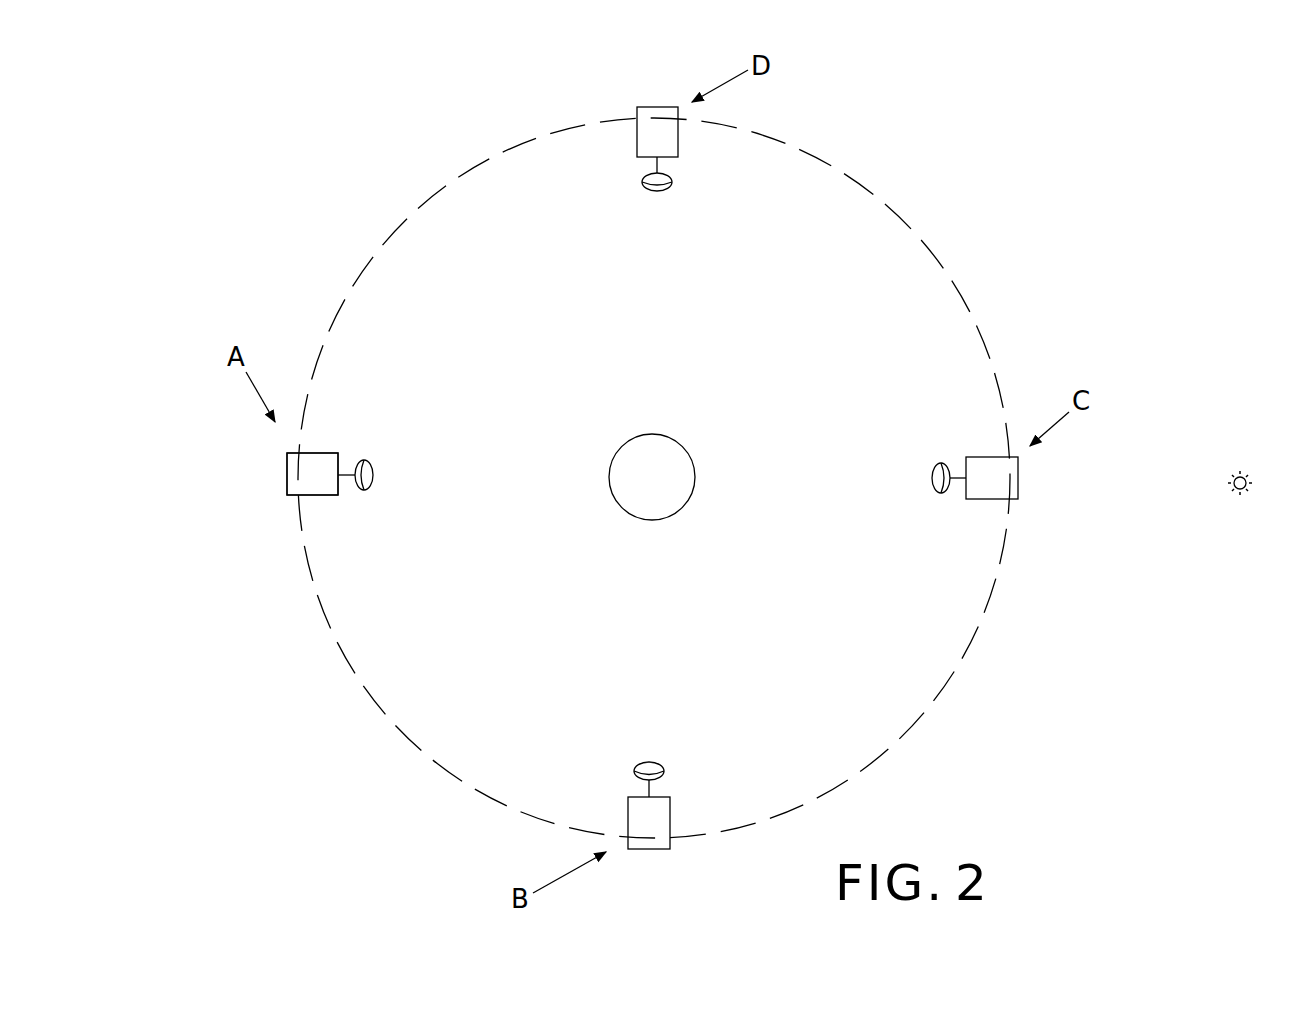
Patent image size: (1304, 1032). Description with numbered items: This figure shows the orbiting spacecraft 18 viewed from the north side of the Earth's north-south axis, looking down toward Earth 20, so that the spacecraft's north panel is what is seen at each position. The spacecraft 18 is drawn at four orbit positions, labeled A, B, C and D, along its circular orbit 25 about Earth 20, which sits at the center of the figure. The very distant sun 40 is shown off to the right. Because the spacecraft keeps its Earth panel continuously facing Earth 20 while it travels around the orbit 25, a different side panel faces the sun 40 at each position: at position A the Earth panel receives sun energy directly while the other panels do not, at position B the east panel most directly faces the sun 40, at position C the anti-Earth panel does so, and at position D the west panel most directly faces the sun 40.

The spacecraft 18 is at (354, 390).
The Earth 20 is at (636, 492).
The orbit 25 is at (918, 237).
The sun 40 is at (1250, 487).